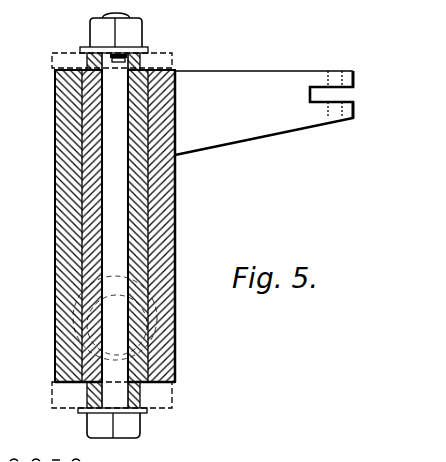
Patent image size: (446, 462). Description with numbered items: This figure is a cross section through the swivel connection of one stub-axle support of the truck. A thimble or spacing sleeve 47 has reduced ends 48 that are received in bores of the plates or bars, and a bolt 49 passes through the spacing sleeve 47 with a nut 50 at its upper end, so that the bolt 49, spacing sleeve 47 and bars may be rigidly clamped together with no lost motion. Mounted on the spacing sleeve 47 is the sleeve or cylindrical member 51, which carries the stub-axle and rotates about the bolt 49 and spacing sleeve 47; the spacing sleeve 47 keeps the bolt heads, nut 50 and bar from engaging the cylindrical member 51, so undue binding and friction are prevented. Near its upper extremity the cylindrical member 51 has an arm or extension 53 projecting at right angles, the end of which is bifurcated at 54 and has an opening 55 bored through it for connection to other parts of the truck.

The spacing sleeve 47 is at (172, 353).
The reduced end 48 is at (141, 395).
The bolt 49 is at (112, 400).
The nut 50 is at (130, 40).
The cylindrical member 51 is at (163, 218).
The arm 53 is at (264, 113).
The bifurcated end 54 is at (355, 78).
The opening 55 is at (333, 73).